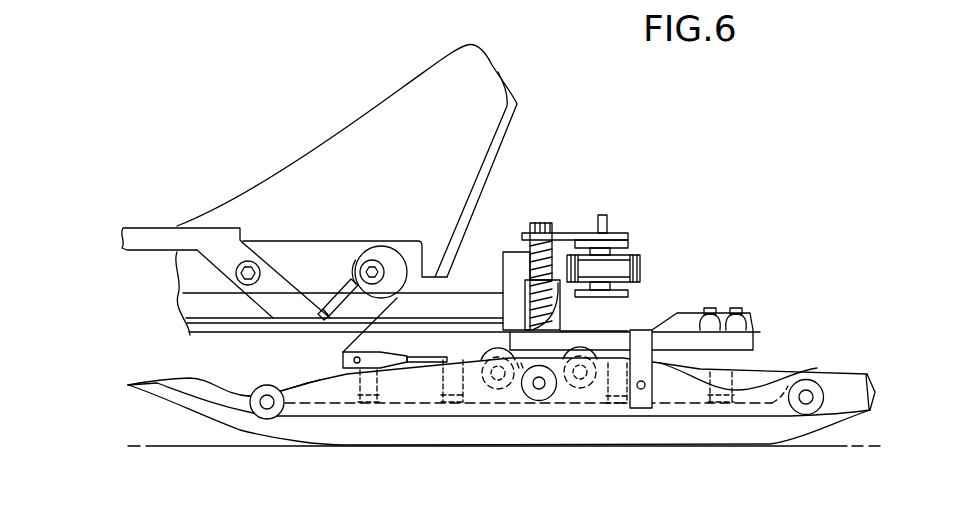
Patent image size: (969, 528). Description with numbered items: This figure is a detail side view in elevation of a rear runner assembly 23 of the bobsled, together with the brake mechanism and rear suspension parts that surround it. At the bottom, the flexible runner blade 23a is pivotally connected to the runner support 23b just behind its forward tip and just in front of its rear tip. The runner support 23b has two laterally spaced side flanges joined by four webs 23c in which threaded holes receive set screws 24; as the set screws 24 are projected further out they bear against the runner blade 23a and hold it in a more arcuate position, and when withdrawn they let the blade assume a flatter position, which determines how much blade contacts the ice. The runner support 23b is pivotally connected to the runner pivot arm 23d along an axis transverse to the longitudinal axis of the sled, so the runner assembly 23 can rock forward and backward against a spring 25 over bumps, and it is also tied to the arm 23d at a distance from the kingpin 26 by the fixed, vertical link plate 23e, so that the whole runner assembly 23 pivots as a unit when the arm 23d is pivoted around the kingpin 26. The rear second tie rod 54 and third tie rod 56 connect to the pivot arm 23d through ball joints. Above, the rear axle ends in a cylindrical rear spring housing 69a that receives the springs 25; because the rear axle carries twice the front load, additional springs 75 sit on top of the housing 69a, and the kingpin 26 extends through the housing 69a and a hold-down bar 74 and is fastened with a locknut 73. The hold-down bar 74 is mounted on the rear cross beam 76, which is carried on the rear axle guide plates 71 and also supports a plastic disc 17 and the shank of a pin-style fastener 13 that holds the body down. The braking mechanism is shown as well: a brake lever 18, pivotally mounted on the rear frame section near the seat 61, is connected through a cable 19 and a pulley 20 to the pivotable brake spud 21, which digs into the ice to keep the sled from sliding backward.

The pin-style fastener 13 is at (608, 238).
The plastic disc 17 is at (638, 260).
The brake lever 18 is at (143, 229).
The cable 19 is at (340, 283).
The pulley 20 is at (370, 262).
The brake spud 21 is at (407, 350).
The rear runner assembly 23 is at (551, 446).
The runner blade 23a is at (223, 414).
The runner support 23b is at (305, 380).
The web 23c is at (750, 369).
The runner pivot arm 23d is at (753, 337).
The link plate 23e is at (655, 383).
The set screw 24 is at (443, 385).
The spring 25 is at (590, 328).
The kingpin 26 is at (557, 311).
The second tie rod 54 is at (687, 312).
The third tie rod 56 is at (723, 312).
The seat 61 is at (493, 67).
The rear spring housing 69a is at (525, 290).
The axle guide plate 71 is at (503, 253).
The locknut 73 is at (552, 233).
The hold-down bar 74 is at (585, 232).
The additional spring 75 is at (530, 260).
The rear cross beam 76 is at (617, 238).